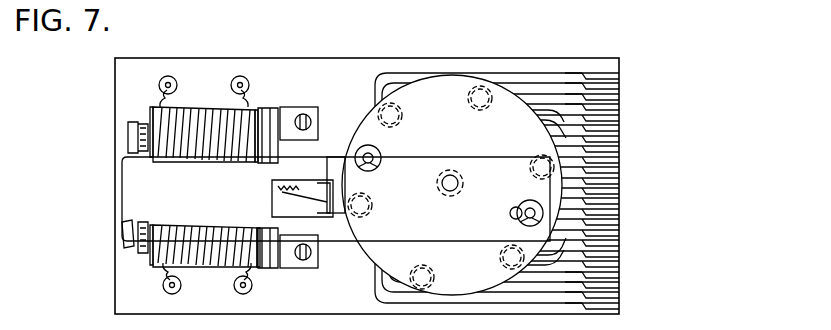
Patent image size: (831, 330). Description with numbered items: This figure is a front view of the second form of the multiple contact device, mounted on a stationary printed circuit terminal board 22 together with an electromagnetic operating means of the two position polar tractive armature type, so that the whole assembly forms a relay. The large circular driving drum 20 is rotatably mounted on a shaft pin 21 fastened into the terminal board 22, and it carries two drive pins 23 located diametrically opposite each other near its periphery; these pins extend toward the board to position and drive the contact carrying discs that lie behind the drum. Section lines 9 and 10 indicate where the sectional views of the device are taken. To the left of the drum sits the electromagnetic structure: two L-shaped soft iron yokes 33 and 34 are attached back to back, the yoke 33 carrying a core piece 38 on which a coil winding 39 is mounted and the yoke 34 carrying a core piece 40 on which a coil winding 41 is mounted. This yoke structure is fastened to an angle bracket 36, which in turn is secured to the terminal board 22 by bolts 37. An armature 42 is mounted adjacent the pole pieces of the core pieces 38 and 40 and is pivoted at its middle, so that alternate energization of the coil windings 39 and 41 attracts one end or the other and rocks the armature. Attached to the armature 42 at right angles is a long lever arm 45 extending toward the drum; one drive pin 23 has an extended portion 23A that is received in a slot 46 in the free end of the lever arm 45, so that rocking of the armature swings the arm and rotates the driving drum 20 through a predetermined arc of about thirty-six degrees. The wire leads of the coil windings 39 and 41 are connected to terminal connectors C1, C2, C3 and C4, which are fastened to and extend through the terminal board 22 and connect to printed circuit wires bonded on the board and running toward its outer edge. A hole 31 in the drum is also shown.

The section line 9- 9 is at (650, 213).
The section line 10- 10 is at (640, 167).
The driving drum 20 is at (453, 90).
The shaft pin 21 is at (452, 175).
The terminal board 22 is at (362, 63).
The drive pin 23 is at (378, 156).
The extended portion 23A is at (520, 218).
The disk hole 31 is at (538, 160).
The yoke 33 is at (268, 107).
The yoke 34 is at (270, 262).
The angle bracket 36 is at (277, 158).
The bolt 37 is at (308, 116).
The core piece 38 is at (140, 122).
The coil winding 39 is at (190, 112).
The core piece 40 is at (143, 252).
The coil winding 41 is at (208, 262).
The armature 42 is at (122, 235).
The lever arm 45 is at (417, 225).
The slot 46 is at (510, 213).
The terminal connector C1 is at (164, 82).
The terminal connector C2 is at (245, 82).
The terminal connector C3 is at (166, 292).
The terminal connector C4 is at (248, 291).